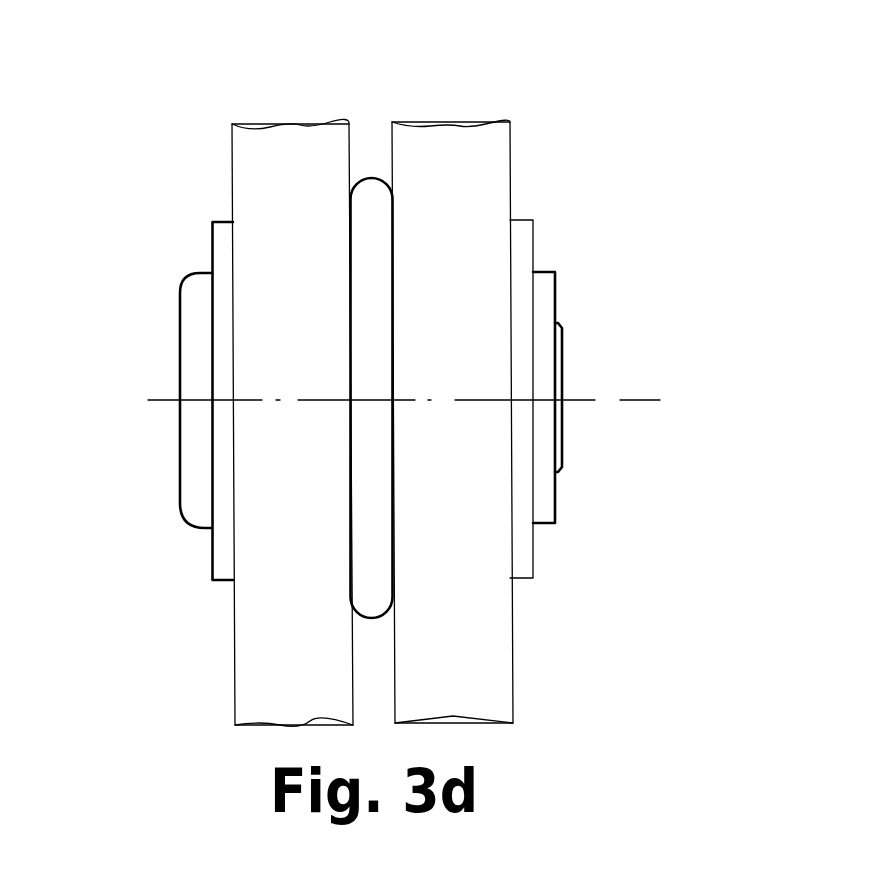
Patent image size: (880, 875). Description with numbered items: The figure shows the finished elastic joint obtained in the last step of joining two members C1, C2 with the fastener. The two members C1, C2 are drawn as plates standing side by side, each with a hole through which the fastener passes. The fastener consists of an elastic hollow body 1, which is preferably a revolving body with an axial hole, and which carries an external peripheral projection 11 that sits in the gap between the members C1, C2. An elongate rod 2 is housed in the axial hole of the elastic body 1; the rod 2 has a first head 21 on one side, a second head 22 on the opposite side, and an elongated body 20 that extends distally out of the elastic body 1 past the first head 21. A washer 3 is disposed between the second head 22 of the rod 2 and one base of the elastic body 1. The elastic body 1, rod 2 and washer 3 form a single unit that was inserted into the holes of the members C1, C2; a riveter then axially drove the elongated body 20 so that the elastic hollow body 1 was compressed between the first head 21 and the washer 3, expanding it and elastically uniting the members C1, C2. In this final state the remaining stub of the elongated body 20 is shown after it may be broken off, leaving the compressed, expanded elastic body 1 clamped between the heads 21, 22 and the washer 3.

The member C1 is at (270, 148).
The member C2 is at (458, 142).
The external peripheral projection 11 is at (372, 180).
The washer 3 is at (218, 235).
The second head 22 is at (198, 467).
The elastic hollow body 1 is at (533, 220).
The elongate rod 2 is at (619, 331).
The first head 21 is at (543, 307).
The elongated body 20 is at (560, 370).